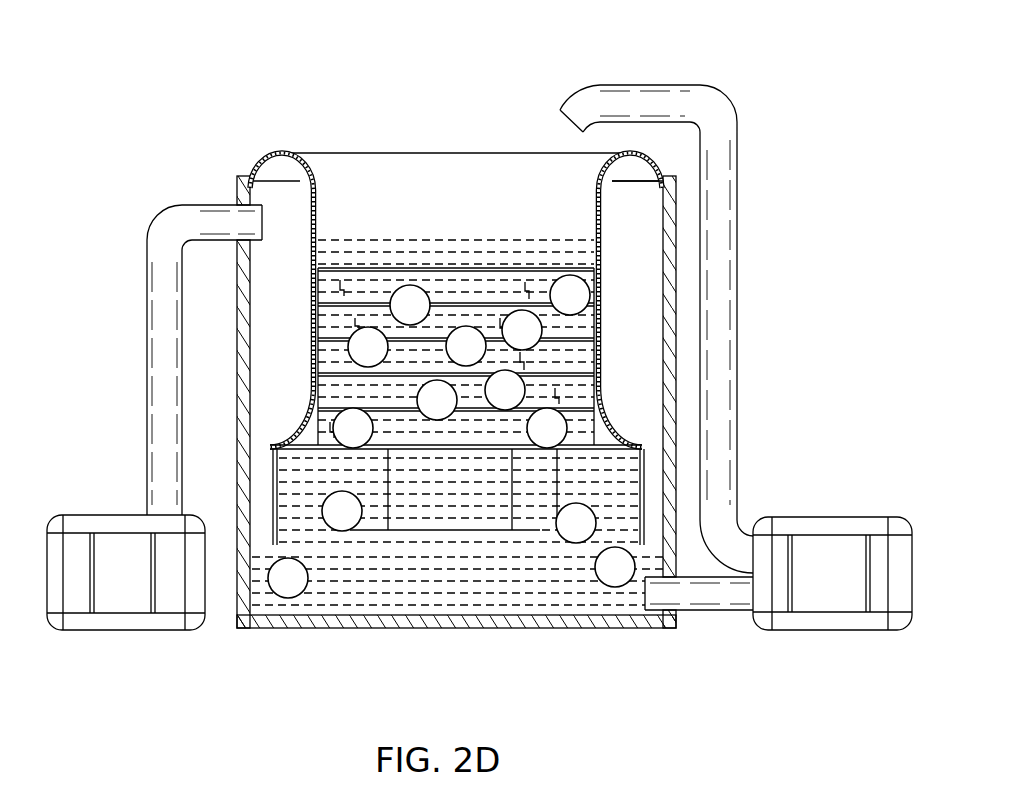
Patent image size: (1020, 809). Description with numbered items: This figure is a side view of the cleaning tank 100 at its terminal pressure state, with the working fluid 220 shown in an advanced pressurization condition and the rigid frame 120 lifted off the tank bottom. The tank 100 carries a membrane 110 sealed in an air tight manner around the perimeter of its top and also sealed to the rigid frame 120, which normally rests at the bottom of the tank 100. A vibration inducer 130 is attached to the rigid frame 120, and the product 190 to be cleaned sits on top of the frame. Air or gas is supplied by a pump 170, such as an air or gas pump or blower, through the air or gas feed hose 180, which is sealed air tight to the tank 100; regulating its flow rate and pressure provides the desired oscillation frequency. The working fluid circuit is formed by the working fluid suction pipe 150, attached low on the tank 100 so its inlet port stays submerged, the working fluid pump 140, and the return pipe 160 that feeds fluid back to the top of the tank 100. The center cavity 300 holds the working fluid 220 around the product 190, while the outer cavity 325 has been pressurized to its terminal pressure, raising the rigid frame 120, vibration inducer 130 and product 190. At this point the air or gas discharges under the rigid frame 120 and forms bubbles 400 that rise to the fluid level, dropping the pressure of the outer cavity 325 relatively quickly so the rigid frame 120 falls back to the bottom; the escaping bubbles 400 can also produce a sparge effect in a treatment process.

The tank 100 is at (236, 178).
The membrane 110 is at (314, 210).
The rigid frame 120 is at (325, 452).
The vibration inducer 130 is at (450, 527).
The working fluid pump 140 is at (808, 630).
The working fluid suction pipe 150 is at (712, 613).
The return pipe 160 is at (737, 391).
The pump 170 is at (128, 631).
The air or gas feed hose 180 is at (147, 318).
The product 190 is at (458, 266).
The liquid 220 is at (550, 590).
The center cavity 300 is at (488, 335).
The outer cavity 325 is at (620, 310).
The bubbles 400 is at (576, 543).